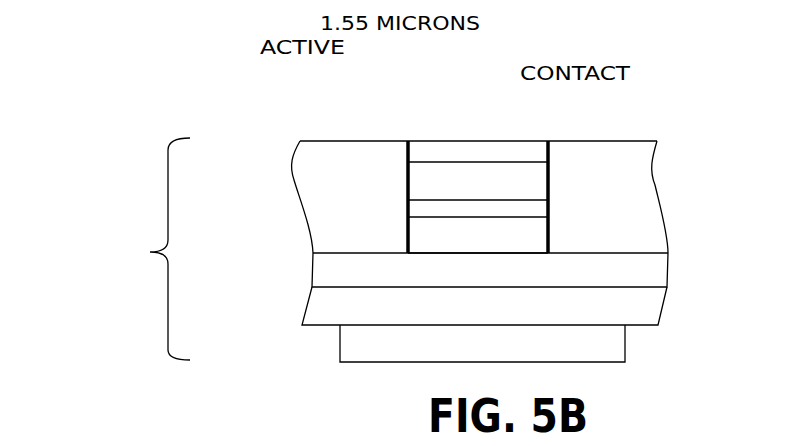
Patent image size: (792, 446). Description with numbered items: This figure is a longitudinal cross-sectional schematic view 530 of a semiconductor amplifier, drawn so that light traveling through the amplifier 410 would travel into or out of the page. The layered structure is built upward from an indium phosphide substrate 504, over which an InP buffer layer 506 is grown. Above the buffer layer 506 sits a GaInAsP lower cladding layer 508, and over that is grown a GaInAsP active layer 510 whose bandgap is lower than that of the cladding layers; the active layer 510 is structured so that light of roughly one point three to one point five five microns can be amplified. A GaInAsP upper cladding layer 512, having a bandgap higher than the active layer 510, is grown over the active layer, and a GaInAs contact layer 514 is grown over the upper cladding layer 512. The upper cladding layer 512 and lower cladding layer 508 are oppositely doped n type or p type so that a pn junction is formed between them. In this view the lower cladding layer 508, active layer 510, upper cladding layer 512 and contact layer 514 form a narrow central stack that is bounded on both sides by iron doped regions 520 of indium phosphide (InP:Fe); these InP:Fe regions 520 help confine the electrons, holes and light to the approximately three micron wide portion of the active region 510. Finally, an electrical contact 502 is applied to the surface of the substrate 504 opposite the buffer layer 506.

The longitudinal cross-sectional schematic view 530 is at (167, 48).
The amplifier 410 is at (156, 252).
The iron doped regions of indium phosphide (InP:Fe) 520 is at (371, 245).
The contact layer 514 is at (488, 140).
The upper cladding layer 512 is at (496, 196).
The active layer 510 is at (445, 210).
The lower cladding layer 508 is at (496, 250).
The buffer layer 506 is at (668, 267).
The substrate 504 is at (305, 300).
The electrical contact 502 is at (625, 340).